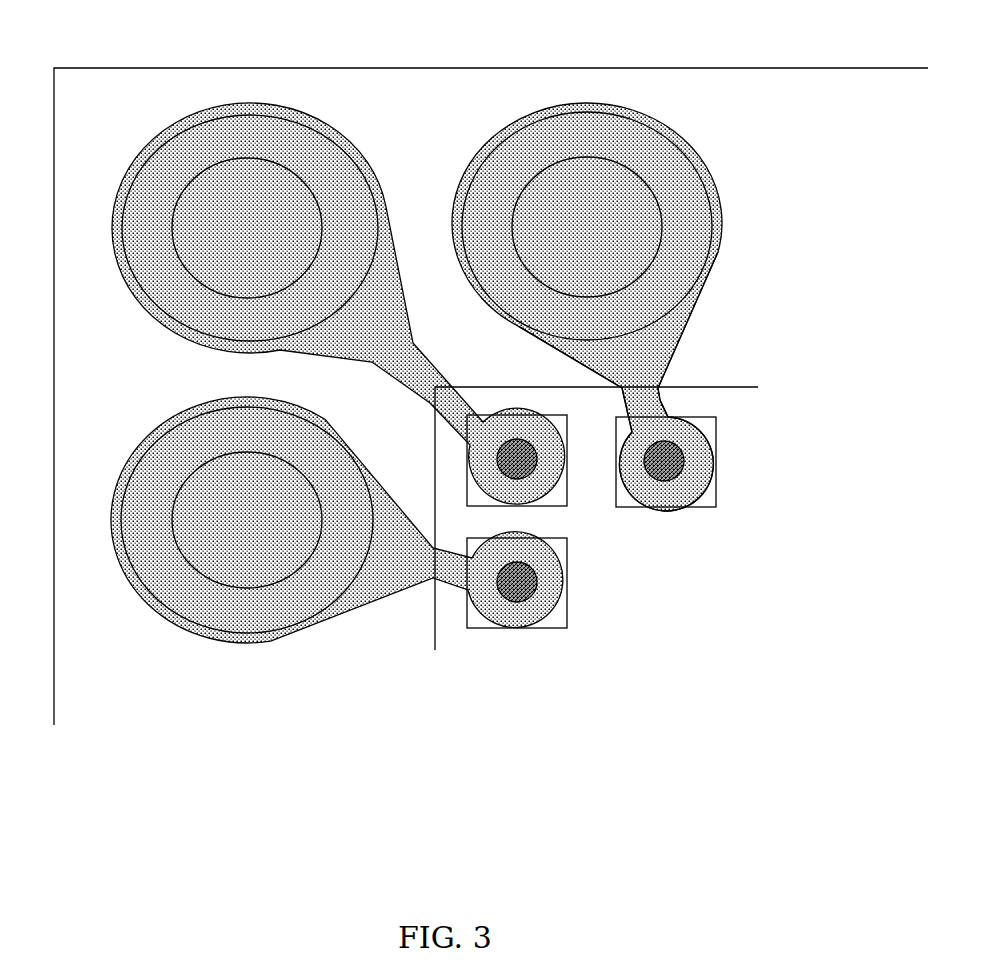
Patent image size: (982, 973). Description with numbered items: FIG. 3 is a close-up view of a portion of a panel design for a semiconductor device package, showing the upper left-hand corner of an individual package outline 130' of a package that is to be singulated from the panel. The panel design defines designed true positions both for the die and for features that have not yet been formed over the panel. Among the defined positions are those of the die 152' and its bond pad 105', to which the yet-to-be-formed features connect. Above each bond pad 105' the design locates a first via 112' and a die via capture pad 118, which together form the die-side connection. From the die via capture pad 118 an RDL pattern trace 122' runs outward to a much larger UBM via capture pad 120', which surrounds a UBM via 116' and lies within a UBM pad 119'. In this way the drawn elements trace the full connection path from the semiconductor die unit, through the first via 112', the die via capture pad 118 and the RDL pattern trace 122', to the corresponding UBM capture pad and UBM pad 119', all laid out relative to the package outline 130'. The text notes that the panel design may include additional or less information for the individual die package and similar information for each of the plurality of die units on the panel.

The package outline 130' is at (491, 367).
The UBM via capture pad 120' is at (608, 307).
The UBM via 116' is at (659, 227).
The UBM pad 119' is at (644, 226).
The RDL pattern trace 122' is at (637, 342).
The die 152' is at (652, 478).
The first via 112' is at (707, 457).
The bond pad 105' is at (735, 464).
The die via capture pad 118 is at (695, 507).